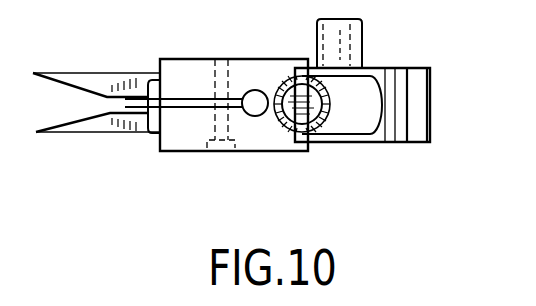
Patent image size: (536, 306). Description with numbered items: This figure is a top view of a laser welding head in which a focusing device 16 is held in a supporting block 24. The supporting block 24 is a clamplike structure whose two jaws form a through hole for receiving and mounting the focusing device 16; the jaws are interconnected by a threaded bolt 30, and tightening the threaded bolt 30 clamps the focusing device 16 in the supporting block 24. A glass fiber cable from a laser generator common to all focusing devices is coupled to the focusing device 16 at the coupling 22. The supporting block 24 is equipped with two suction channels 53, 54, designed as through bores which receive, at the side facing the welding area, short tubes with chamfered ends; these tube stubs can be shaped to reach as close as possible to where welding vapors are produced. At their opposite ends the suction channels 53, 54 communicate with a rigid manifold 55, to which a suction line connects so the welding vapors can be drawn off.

The focusing device 16 is at (370, 153).
The glass fiber cable coupling 22 is at (292, 153).
The supporting block 24 is at (253, 60).
The threaded bolt 30 is at (212, 152).
The suction channel 53 is at (95, 82).
The suction channel 54 is at (100, 127).
The rigid manifold 55 is at (348, 42).